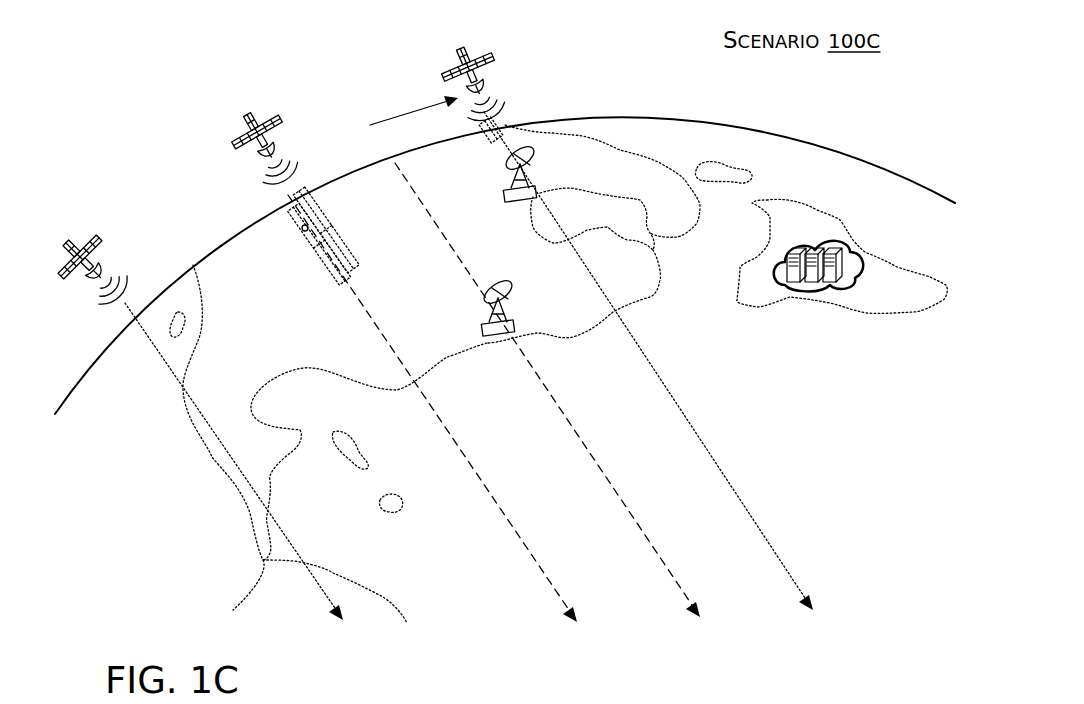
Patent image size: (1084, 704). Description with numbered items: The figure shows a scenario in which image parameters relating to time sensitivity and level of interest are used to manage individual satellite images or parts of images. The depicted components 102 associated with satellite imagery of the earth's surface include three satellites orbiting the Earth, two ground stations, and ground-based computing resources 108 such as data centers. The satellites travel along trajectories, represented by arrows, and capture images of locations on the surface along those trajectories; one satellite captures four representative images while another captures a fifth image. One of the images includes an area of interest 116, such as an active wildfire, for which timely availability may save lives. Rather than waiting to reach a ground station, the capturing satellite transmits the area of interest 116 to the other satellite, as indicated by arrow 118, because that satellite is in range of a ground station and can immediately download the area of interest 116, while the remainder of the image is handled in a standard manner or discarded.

The components 102 is at (172, 61).
The ground-based computing resources 108 is at (818, 290).
The area of interest 116 is at (306, 232).
The arrow 118 is at (280, 151).